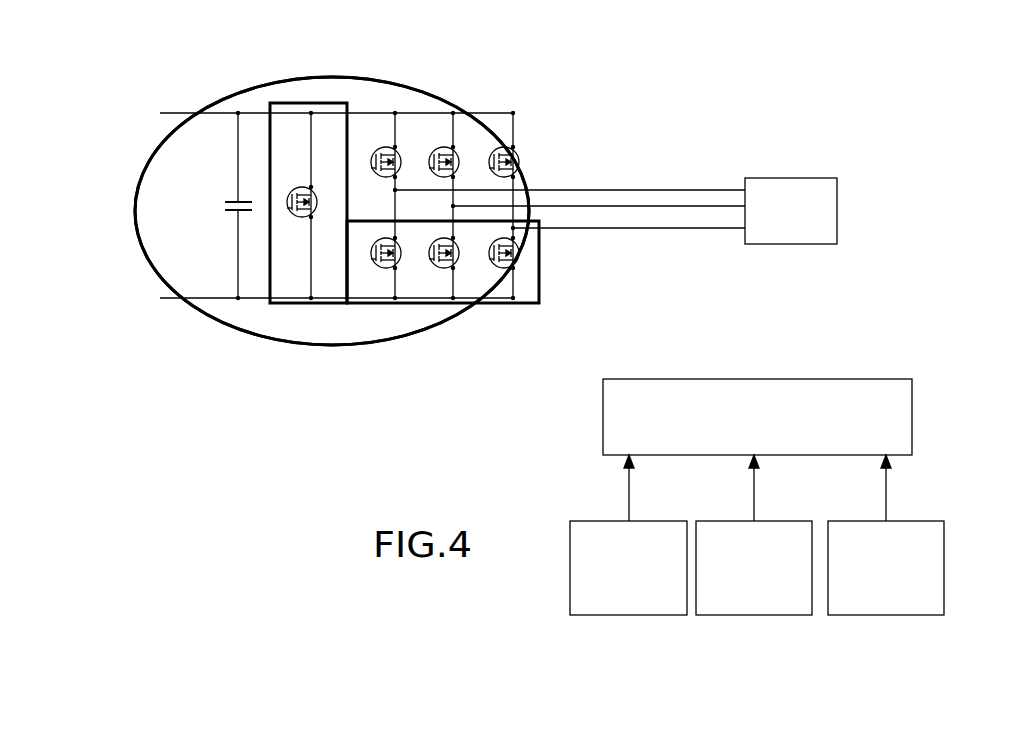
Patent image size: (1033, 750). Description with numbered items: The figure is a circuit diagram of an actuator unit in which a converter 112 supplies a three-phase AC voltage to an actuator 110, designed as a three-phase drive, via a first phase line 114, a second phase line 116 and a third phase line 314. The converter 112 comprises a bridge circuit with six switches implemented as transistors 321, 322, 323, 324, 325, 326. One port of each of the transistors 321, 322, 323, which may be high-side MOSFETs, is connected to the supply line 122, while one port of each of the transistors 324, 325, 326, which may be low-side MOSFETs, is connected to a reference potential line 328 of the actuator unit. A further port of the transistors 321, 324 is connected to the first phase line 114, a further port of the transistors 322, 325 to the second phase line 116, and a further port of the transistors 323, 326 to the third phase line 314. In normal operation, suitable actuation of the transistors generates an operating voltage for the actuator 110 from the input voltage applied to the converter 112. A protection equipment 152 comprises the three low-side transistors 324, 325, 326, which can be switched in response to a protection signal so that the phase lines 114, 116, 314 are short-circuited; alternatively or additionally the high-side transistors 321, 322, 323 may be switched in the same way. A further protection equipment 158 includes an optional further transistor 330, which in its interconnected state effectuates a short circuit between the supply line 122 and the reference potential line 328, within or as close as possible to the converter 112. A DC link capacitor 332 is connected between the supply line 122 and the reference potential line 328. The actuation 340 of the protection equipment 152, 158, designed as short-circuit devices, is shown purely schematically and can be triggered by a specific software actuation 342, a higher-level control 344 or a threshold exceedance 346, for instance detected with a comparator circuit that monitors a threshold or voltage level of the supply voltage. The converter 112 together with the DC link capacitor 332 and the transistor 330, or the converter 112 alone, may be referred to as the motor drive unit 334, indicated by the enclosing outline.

The actuator 110 is at (790, 178).
The converter 112 is at (506, 86).
The first phase line 114 is at (637, 190).
The second phase line 116 is at (695, 206).
The supply line 122 is at (181, 113).
The protection equipment 152 is at (533, 303).
The protection equipment 158 is at (312, 103).
The third phase line 314 is at (651, 228).
The transistor 321 is at (380, 149).
The transistor 322 is at (437, 149).
The transistor 323 is at (495, 142).
The transistor 324 is at (374, 265).
The transistor 325 is at (433, 265).
The transistor 326 is at (492, 265).
The reference potential line 328 is at (207, 298).
The further transistor 330 is at (288, 192).
The DC link capacitor 332 is at (230, 203).
The motor drive unit 334 is at (150, 266).
The actuation 340 is at (817, 379).
The software actuation 342 is at (633, 615).
The higher-level control 344 is at (762, 615).
The threshold exceedance 346 is at (892, 615).